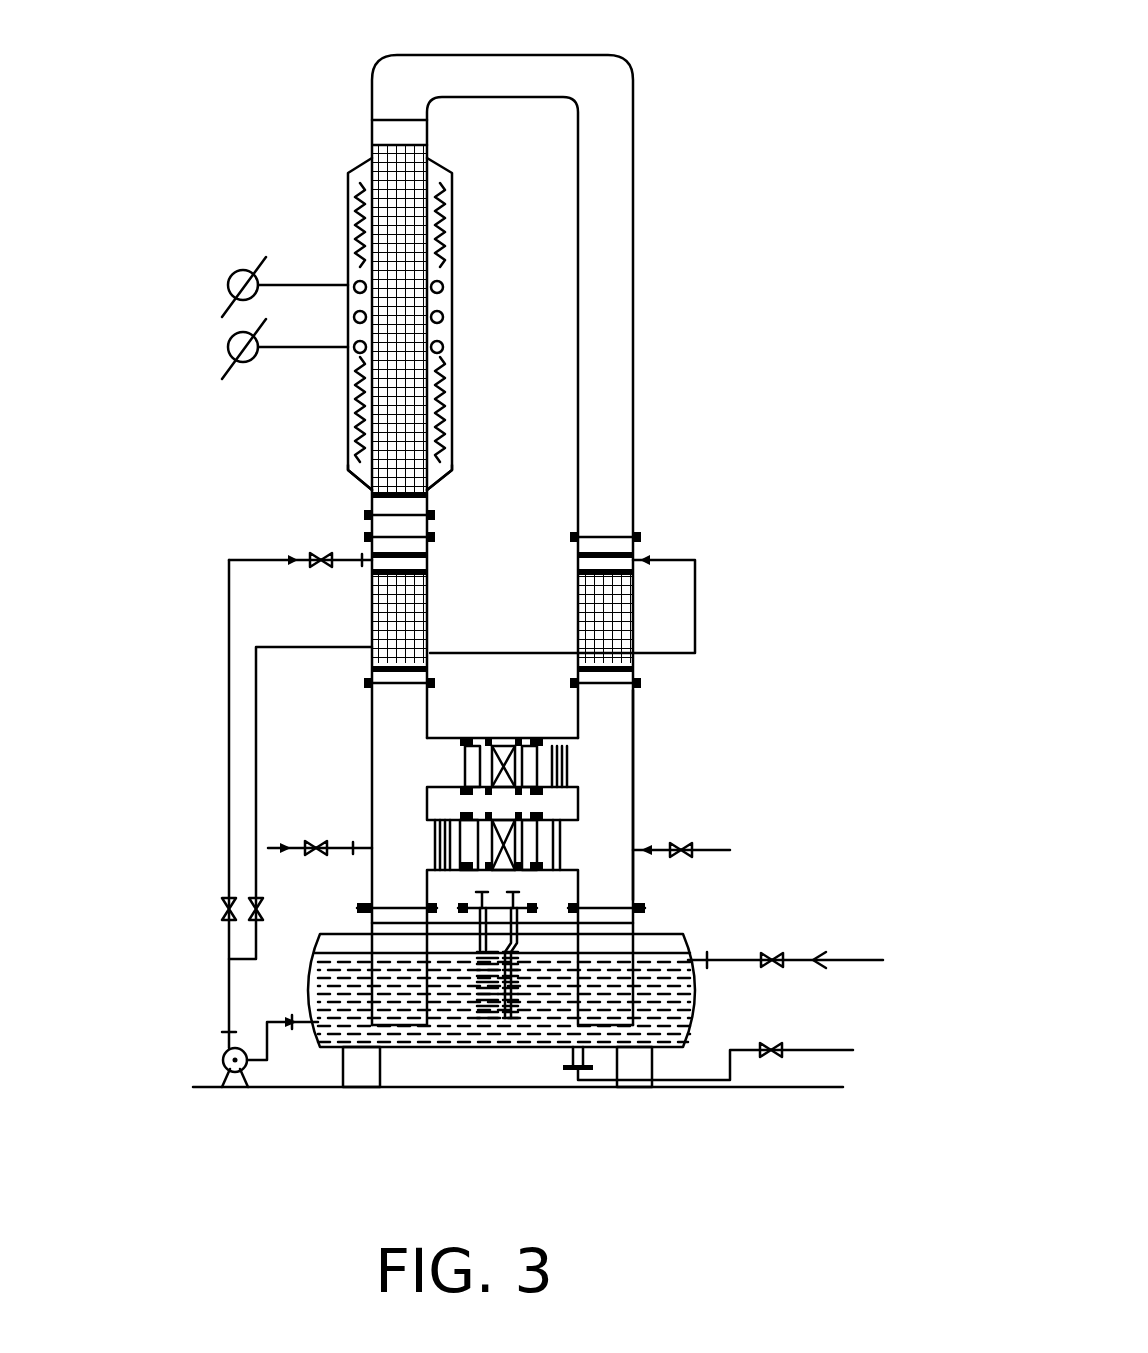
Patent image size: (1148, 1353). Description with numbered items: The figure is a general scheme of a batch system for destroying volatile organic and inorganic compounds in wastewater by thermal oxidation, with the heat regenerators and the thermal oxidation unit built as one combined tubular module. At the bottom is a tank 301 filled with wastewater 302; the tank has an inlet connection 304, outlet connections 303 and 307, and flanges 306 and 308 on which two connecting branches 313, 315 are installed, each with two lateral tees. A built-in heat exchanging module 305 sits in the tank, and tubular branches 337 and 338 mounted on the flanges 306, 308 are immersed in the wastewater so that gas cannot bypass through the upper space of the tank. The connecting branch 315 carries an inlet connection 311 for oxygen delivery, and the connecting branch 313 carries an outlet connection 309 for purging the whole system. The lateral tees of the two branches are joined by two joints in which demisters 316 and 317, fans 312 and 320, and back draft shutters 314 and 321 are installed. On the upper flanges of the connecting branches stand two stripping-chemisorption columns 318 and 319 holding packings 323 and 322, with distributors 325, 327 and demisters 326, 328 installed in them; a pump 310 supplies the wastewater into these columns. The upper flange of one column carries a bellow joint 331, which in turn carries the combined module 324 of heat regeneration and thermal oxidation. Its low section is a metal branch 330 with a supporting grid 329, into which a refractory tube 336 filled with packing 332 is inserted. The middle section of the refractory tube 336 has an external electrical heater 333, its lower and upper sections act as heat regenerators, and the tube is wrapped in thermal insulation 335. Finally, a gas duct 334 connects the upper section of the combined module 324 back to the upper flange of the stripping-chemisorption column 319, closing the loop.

The tank 301 is at (680, 934).
The wastewater 302 is at (515, 1037).
The outlet connection 303 is at (268, 1022).
The inlet connection 304 is at (571, 1062).
The built-in heat exchanging module 305 is at (478, 1015).
The flange 306 is at (358, 907).
The outlet connection 307 is at (709, 955).
The flange 308 is at (648, 906).
The outlet connection 309 is at (646, 848).
The pump 310 is at (223, 1060).
The inlet connection 311 is at (355, 848).
The fan 312 is at (567, 786).
The connecting branch 313 is at (634, 800).
The back draft shutter 314 is at (463, 818).
The connecting branch 315 is at (435, 845).
The demister 316 is at (436, 850).
The demister 317 is at (560, 752).
The stripping-chemisorption column 318 is at (370, 618).
The stripping-chemisorption column 319 is at (634, 612).
The fan 320 is at (503, 738).
The back draft shutter 321 is at (553, 738).
The packing 322 is at (582, 625).
The packing 323 is at (430, 597).
The combined module of heat regeneration—thermal oxidation 324 is at (318, 190).
The distributor 325 is at (368, 558).
The demister 326 is at (432, 555).
The distributor 327 is at (646, 562).
The demister 328 is at (576, 559).
The supporting grid 329 is at (432, 498).
The metal branch 330 is at (348, 470).
The bellow joint 331 is at (368, 515).
The packing 332 is at (388, 200).
The external electrical heater 333 is at (350, 286).
The gas duct 334 is at (637, 222).
The thermal insulation 335 is at (428, 245).
The refractory tube 336 is at (432, 410).
The tubular branch 337 is at (656, 1062).
The tubular branch 338 is at (382, 983).